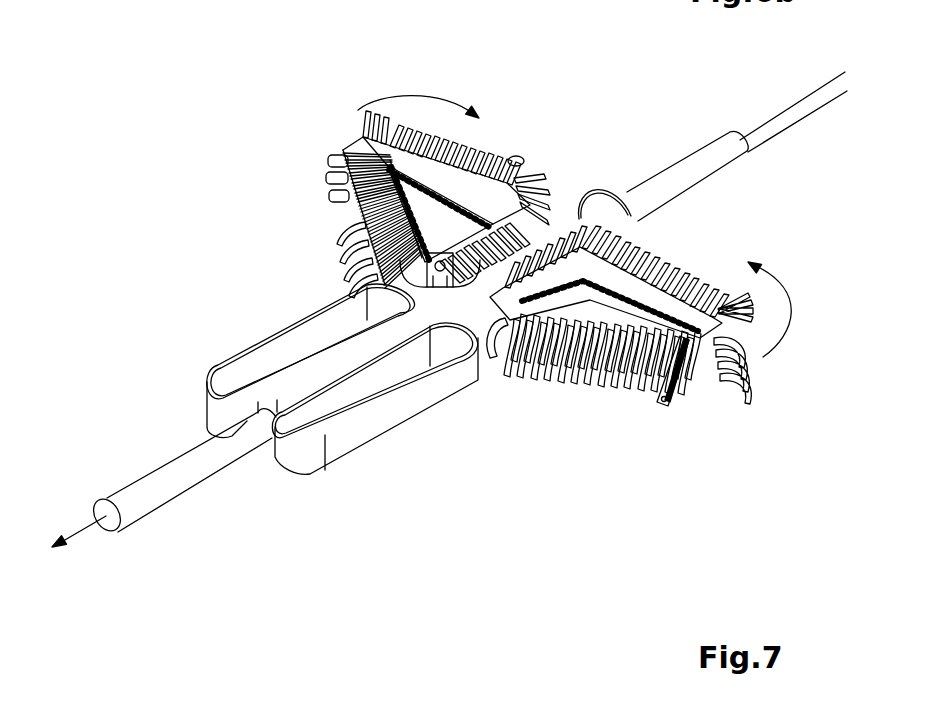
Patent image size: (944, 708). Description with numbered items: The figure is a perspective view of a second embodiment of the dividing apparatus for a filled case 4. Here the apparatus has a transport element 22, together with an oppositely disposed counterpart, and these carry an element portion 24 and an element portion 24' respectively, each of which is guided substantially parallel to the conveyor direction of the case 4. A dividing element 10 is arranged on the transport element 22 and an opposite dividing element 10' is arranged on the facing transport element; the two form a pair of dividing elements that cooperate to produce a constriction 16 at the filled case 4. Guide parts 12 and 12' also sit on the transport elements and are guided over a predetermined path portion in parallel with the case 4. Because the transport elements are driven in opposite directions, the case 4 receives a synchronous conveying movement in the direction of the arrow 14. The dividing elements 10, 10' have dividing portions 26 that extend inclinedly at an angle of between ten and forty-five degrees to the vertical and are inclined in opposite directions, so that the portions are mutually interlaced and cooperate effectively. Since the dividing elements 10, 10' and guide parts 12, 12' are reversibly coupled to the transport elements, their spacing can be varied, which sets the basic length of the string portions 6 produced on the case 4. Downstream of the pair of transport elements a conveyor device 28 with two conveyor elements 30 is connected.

The filled case 4 is at (680, 183).
The string portions 6 is at (173, 480).
The dividing element 10 is at (620, 363).
The dividing element 10' is at (397, 175).
The guide part 12 is at (602, 398).
The guide part 12' is at (330, 224).
The arrow 14 is at (80, 523).
The constriction 16 is at (268, 400).
The transport element 22 is at (333, 117).
The element portion 24 is at (593, 189).
The element portion 24' is at (512, 184).
The dividing portions 26 is at (643, 397).
The conveyor device 28 is at (430, 442).
The conveyor elements 30 is at (367, 430).